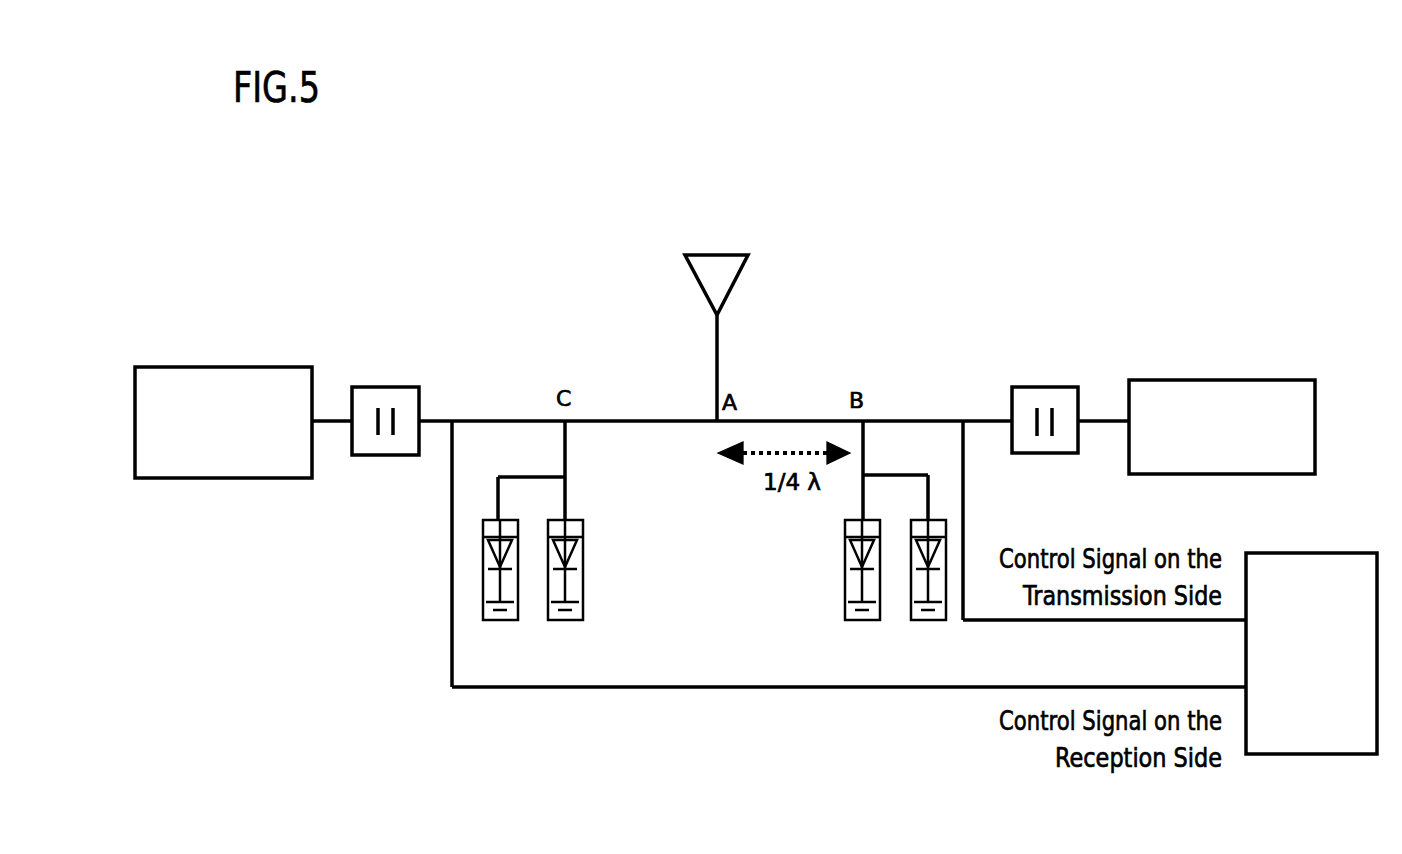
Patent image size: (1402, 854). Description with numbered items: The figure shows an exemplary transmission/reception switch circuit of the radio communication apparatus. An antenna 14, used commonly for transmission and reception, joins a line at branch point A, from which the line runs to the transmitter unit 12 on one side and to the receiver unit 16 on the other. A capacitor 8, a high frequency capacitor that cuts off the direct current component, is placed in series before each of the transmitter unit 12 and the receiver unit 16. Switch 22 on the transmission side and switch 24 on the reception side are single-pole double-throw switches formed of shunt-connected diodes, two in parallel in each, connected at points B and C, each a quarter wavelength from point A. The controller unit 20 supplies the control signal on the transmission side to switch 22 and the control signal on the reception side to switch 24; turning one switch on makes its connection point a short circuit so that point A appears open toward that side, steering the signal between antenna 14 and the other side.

The capacitor 8 is at (390, 387).
The transmitter unit 12 is at (1222, 427).
The antenna 14 is at (713, 253).
The receiver unit 16 is at (223, 422).
The controller unit 20 is at (1311, 653).
The switch on the transmission side 22 is at (915, 620).
The switch on the reception side 24 is at (495, 620).